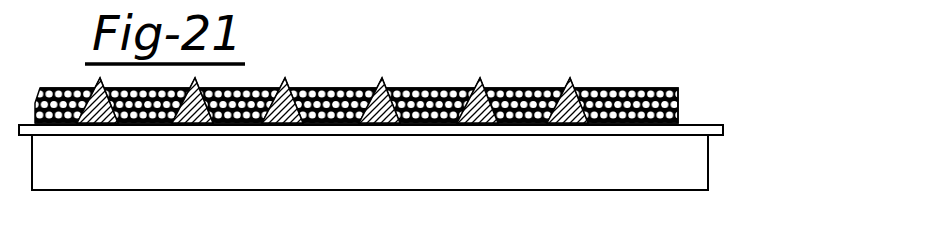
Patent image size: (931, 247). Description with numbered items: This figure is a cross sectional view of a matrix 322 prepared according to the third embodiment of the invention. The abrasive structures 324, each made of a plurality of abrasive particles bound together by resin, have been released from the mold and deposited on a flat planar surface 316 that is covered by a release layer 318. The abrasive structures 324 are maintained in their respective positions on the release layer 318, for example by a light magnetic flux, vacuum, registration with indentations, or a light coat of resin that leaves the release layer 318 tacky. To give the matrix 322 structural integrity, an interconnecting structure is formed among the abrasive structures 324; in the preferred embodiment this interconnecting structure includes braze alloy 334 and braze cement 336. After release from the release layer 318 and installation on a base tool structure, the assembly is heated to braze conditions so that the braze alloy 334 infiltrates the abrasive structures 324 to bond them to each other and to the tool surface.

The flat planar surface 316 is at (708, 168).
The release layer 318 is at (723, 130).
The matrix 322 is at (431, 61).
The abrasive structure 324 is at (480, 80).
The braze alloy 334 is at (303, 93).
The braze cement 336 is at (655, 90).